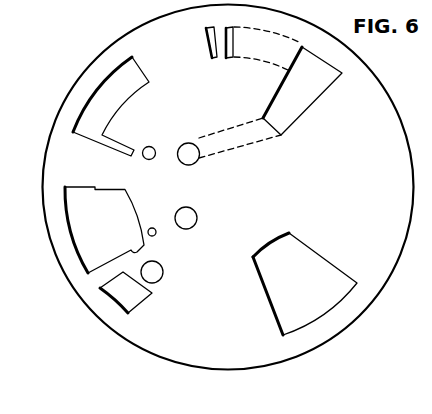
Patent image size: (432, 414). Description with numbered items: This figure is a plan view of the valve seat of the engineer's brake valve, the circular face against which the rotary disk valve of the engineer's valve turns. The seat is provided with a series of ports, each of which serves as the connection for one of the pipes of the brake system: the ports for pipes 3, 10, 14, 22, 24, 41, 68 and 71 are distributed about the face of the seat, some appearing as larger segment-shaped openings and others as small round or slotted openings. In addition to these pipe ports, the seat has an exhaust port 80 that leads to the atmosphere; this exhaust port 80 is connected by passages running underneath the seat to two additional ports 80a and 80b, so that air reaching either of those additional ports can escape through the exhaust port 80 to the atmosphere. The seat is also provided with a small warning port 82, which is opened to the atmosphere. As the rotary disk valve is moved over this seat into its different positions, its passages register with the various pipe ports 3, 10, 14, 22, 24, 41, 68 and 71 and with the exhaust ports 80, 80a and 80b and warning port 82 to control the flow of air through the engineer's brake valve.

The pipe 3 is at (104, 230).
The pipe 10 is at (203, 206).
The pipe 14 is at (305, 284).
The pipe 22 is at (210, 29).
The pipe 24 is at (111, 106).
The pipe 41 is at (126, 292).
The pipe 68 is at (162, 268).
The pipe 71 is at (150, 146).
The exhaust port 80 is at (288, 81).
The additional port 80a is at (192, 143).
The additional port 80b is at (230, 47).
The warning port 82 is at (152, 228).